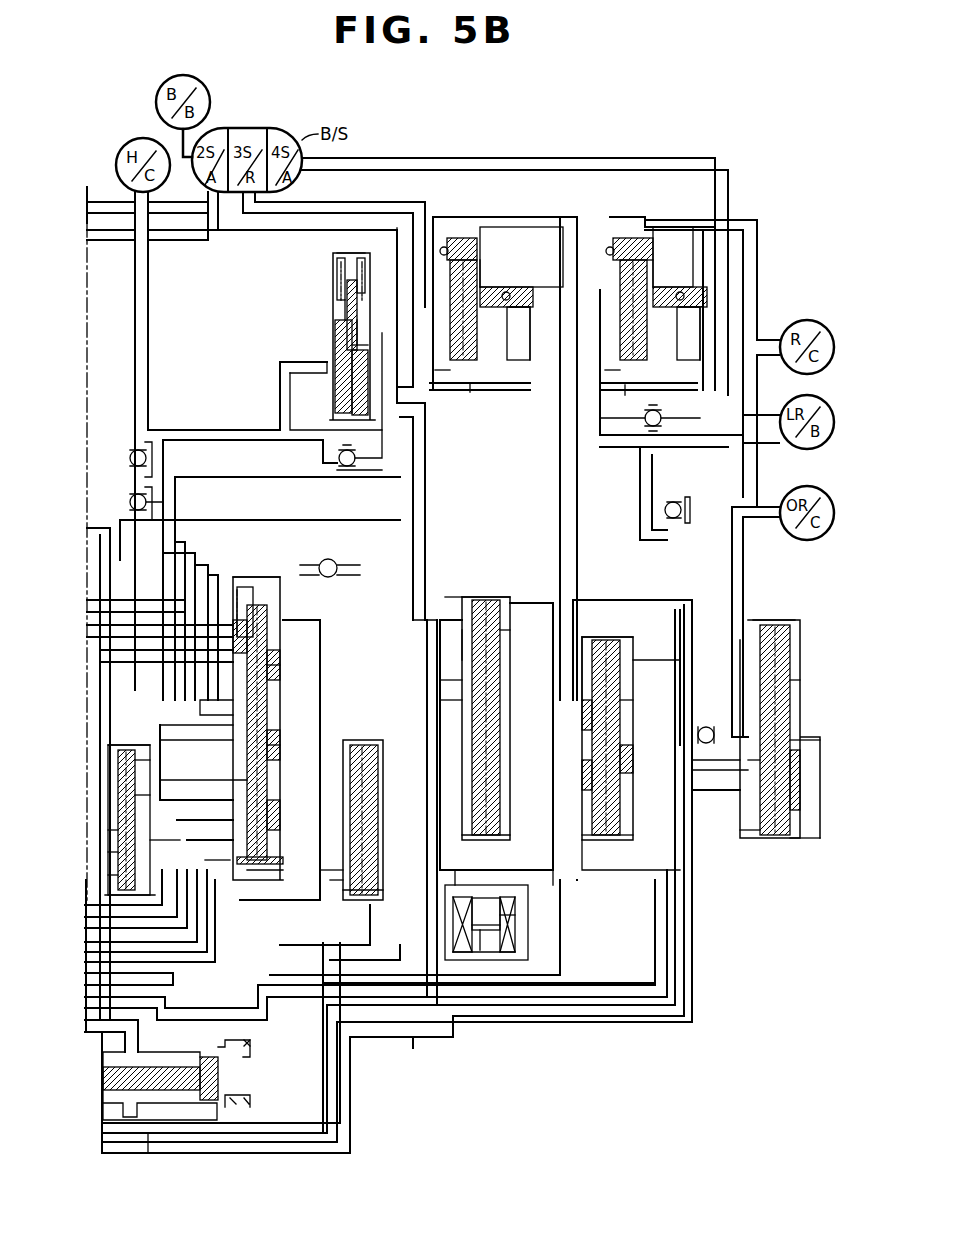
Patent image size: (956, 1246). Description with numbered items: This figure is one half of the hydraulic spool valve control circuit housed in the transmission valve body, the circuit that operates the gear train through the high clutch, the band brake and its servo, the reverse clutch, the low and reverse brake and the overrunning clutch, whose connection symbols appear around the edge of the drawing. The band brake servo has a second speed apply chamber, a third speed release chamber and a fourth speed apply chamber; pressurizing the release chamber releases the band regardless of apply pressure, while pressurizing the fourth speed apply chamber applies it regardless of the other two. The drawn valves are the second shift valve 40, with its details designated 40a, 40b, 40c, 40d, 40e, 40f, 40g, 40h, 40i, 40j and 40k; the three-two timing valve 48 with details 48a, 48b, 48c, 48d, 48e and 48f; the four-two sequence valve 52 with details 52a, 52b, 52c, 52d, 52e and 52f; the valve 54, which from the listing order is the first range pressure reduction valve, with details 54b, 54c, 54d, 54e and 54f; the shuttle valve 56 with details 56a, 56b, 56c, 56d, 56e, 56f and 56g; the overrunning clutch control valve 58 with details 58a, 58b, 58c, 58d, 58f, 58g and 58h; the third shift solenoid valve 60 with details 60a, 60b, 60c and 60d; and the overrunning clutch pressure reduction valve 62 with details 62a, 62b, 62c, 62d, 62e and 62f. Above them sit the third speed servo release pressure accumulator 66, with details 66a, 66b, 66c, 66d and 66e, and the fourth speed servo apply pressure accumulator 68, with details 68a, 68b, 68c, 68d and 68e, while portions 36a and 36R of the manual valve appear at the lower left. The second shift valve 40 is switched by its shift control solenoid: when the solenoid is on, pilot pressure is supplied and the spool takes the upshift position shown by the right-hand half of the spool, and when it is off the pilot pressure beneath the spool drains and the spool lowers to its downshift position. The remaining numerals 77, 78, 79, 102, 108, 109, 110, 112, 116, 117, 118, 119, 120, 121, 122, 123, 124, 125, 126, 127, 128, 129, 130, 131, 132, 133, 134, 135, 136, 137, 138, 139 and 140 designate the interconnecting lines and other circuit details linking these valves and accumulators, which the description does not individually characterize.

The carrier member 36a is at (219, 1075).
The ring gear 36R is at (232, 1094).
The second shift valve 40 is at (260, 862).
The manual valve port 40a is at (288, 560).
The manual valve port 40b is at (280, 600).
The manual valve port 40c is at (265, 870).
The manual valve port 40d is at (105, 645).
The manual valve port 40e is at (283, 675).
The manual valve port 40f is at (235, 710).
The manual valve port 40g is at (283, 720).
The manual valve port 40h is at (160, 738).
The manual valve port 40i is at (240, 780).
The manual valve port 40j is at (283, 625).
The manual valve port 40k is at (160, 722).
The 3-2 timing valve 48 is at (322, 289).
The shift valve port 48a is at (340, 254).
The shift valve port 48b is at (345, 322).
The shift valve port 48c is at (350, 340).
The shift valve port 48d is at (350, 352).
The shift valve port 48e is at (338, 410).
The shift valve port 48f is at (325, 360).
The 4-2 sequence valve 52 is at (112, 812).
The shift valve port 52a is at (122, 745).
The shift valve port 52b is at (112, 878).
The shift valve port 52c is at (110, 830).
The shift valve port 52d is at (110, 852).
The shift valve port 52e is at (112, 897).
The shift valve port 52f is at (180, 840).
The shift valve 54 is at (351, 729).
The shift valve port 54b is at (136, 762).
The shift valve port 54c is at (315, 947).
The shift valve port 54d is at (355, 890).
The shift valve port 54e is at (136, 797).
The shift valve port 54f is at (335, 882).
The shuttle valve 56 is at (483, 587).
The shift valve port 56a is at (495, 597).
The shift valve port 56b is at (468, 645).
The shift valve port 56c is at (480, 838).
The shift valve port 56d is at (505, 660).
The shift valve port 56e is at (462, 700).
The shift valve port 56f is at (462, 715).
The shift valve port 56g is at (455, 597).
The overrunning clutch control valve 58 is at (590, 630).
The shift valve port 58a is at (588, 645).
The shift valve port 58b is at (633, 670).
The shift valve port 58c is at (633, 855).
The shift valve port 58d is at (582, 640).
The shift valve port 58f is at (628, 835).
The shift valve port 58g is at (600, 835).
The shift valve port 58h is at (633, 705).
The third shift solenoid valve 60 is at (551, 904).
The solenoid valve port 60a is at (500, 925).
The solenoid valve port 60b is at (480, 955).
The solenoid valve port 60c is at (515, 916).
The solenoid valve plunger 60d is at (482, 903).
The overrunning clutch pressure reduction valve 62 is at (765, 840).
The shift valve port 62a is at (785, 650).
The shift valve port 62b is at (788, 695).
The shift valve port 62c is at (755, 838).
The shift valve port 62d is at (792, 740).
The shift valve port 62e is at (750, 765).
The shift valve port 62f is at (800, 838).
The third speed servo release pressure accumulator 66 is at (468, 232).
The accumulator piston 66a is at (490, 290).
The accumulator chamber 66b is at (470, 385).
The accumulator spring 66c is at (520, 320).
The accumulator chamber 66d is at (505, 244).
The accumulator port 66e is at (447, 372).
The fourth speed servo apply pressure accumulator 68 is at (632, 233).
The accumulator piston 68a is at (683, 295).
The accumulator chamber 68b is at (628, 378).
The accumulator spring 68c is at (697, 325).
The accumulator chamber 68d is at (673, 250).
The accumulator port 68e is at (615, 380).
The output shaft 77 is at (148, 1153).
The fluid line 78 is at (398, 212).
The fluid line 79 is at (413, 1040).
The fluid line 102 is at (174, 980).
The fluid line 108 is at (330, 870).
The fluid line 109 is at (528, 883).
The fluid line 110 is at (440, 885).
The fluid line 112 is at (395, 962).
The fluid line 116 is at (610, 983).
The fluid line 117 is at (226, 855).
The fluid line 118 is at (135, 372).
The check valve 119 is at (121, 455).
The check valve 120 is at (128, 497).
The fluid line 121 is at (400, 240).
The check valve 122 is at (328, 471).
The fluid line 123 is at (280, 380).
The fluid line 124 is at (218, 477).
The fluid line 125 is at (100, 600).
The fluid line 126 is at (238, 555).
The check valve 127 is at (320, 560).
The fluid line 128 is at (757, 234).
The check valve 129 is at (705, 518).
The fluid line 130 is at (640, 462).
The fluid line 131 is at (320, 636).
The fluid line 132 is at (280, 900).
The fluid line 133 is at (413, 622).
The fluid line 134 is at (518, 665).
The fluid line 135 is at (568, 158).
The check valve 136 is at (690, 412).
The fluid line 137 is at (745, 800).
The fluid line 138 is at (743, 589).
The check valve 139 is at (700, 727).
The fluid line 140 is at (630, 606).